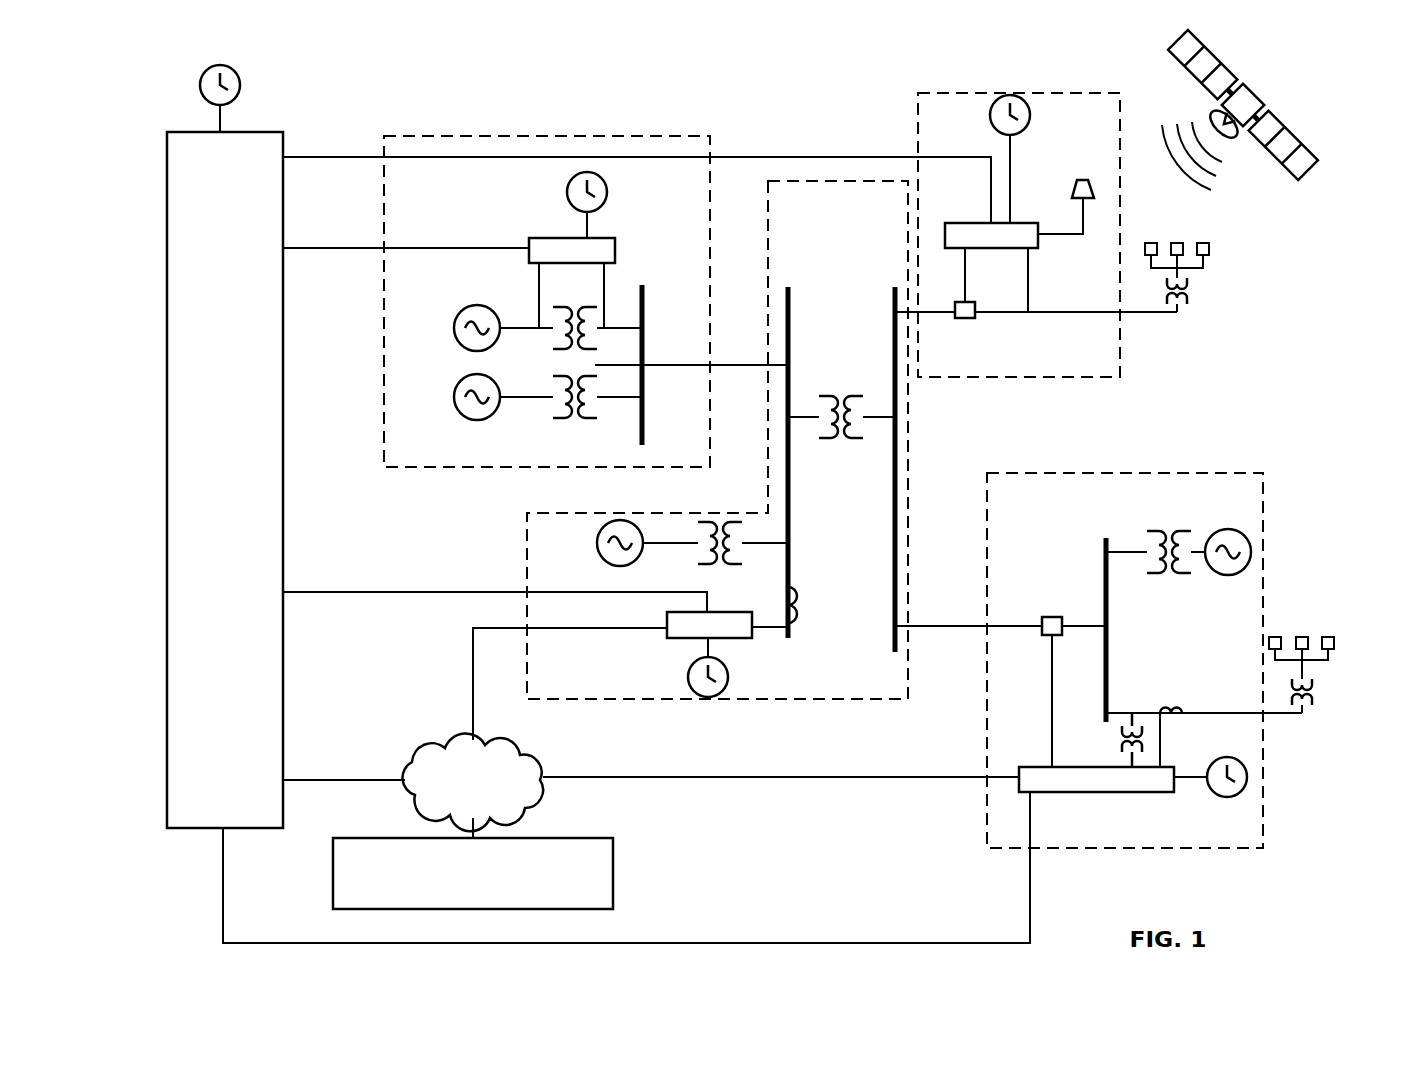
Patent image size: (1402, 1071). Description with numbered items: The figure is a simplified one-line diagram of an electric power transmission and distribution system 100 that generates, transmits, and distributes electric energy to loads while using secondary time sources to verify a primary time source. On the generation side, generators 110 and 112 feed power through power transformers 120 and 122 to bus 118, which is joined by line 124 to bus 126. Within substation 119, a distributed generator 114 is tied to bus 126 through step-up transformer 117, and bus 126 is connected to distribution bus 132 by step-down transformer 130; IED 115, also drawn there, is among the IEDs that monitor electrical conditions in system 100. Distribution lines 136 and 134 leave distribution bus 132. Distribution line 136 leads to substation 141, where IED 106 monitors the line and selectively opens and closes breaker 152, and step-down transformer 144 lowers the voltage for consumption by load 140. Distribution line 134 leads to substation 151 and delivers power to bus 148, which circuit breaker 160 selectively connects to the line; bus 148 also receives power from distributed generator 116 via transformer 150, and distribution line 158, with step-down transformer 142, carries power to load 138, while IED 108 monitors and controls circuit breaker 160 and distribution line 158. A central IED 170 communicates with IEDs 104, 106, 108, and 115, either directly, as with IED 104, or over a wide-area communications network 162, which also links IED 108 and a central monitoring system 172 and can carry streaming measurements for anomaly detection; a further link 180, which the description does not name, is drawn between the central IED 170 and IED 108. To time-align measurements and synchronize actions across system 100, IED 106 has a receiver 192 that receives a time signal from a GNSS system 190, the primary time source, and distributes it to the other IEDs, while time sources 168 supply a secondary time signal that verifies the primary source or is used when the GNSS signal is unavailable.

The electric power transmission and distribution system 100 is at (1297, 363).
The IED 104 is at (529, 238).
The IED 106 is at (958, 223).
The IED 108 is at (1147, 793).
The generator 110 is at (454, 328).
The generator 112 is at (454, 397).
The generator 114 is at (597, 543).
The IED 115 is at (672, 640).
The distributed generator 116 is at (1215, 576).
The step-up transformer 117 is at (700, 557).
The bus 118 is at (645, 420).
The substation 119 is at (527, 550).
The power transformer 120 is at (553, 340).
The power transformer 122 is at (575, 420).
The transmission line 124 is at (725, 367).
The bus 126 is at (790, 447).
The step-down transformer 130 is at (847, 395).
The distribution bus 132 is at (893, 612).
The distribution line 134 is at (997, 630).
The distribution line 136 is at (935, 315).
The load 138 is at (1300, 637).
The load 140 is at (1215, 250).
The substation 141 is at (1095, 378).
The step-down transformer 142 is at (1312, 700).
The step-down transformer 144 is at (1190, 292).
The bus 148 is at (1103, 540).
The transformer 150 is at (1165, 530).
The substation 151 is at (1197, 848).
The breaker 152 is at (972, 322).
The distribution line 158 is at (1200, 712).
The circuit breaker 160 is at (1047, 617).
The communication network 162 is at (457, 806).
The time source 168 is at (240, 85).
The central IED 170 is at (212, 504).
The central monitoring system 172 is at (457, 899).
The communication line 180 is at (826, 943).
The GNSS system 190 is at (1268, 98).
The receiver 192 is at (1075, 185).